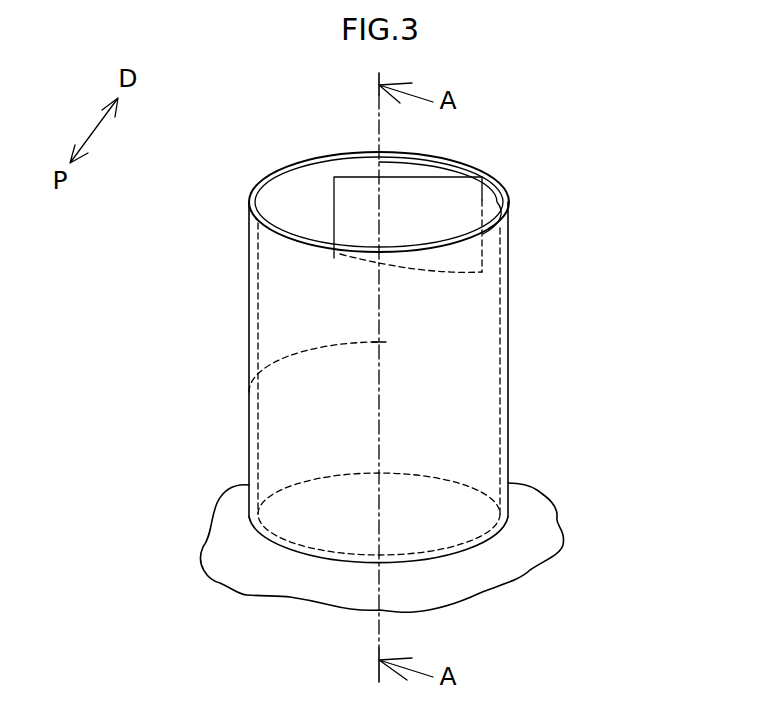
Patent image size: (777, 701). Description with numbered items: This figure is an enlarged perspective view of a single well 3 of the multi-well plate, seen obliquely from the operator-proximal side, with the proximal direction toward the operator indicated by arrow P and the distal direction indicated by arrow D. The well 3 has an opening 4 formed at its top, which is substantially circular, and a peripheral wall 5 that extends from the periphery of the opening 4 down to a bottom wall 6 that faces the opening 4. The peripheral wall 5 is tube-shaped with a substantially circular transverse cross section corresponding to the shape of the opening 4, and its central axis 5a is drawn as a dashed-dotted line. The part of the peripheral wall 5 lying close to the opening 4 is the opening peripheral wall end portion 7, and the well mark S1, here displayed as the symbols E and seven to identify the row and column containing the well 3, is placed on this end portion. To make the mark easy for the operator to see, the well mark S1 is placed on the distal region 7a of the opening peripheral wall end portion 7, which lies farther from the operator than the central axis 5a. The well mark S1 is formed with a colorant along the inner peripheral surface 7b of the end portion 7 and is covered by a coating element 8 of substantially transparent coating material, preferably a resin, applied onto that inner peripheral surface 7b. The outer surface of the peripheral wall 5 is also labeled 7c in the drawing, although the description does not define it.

The well 3 is at (528, 204).
The opening 4 is at (295, 176).
The peripheral wall 5 is at (508, 392).
The central axis 5a is at (251, 382).
The bottom wall 6 is at (338, 535).
The opening peripheral wall end portion 7 is at (287, 270).
The distal region 7a is at (320, 208).
The inner peripheral surface 7b is at (268, 207).
The outer peripheral surface 7c is at (510, 260).
The coating element 8 is at (459, 205).
The well mark S1 is at (432, 195).